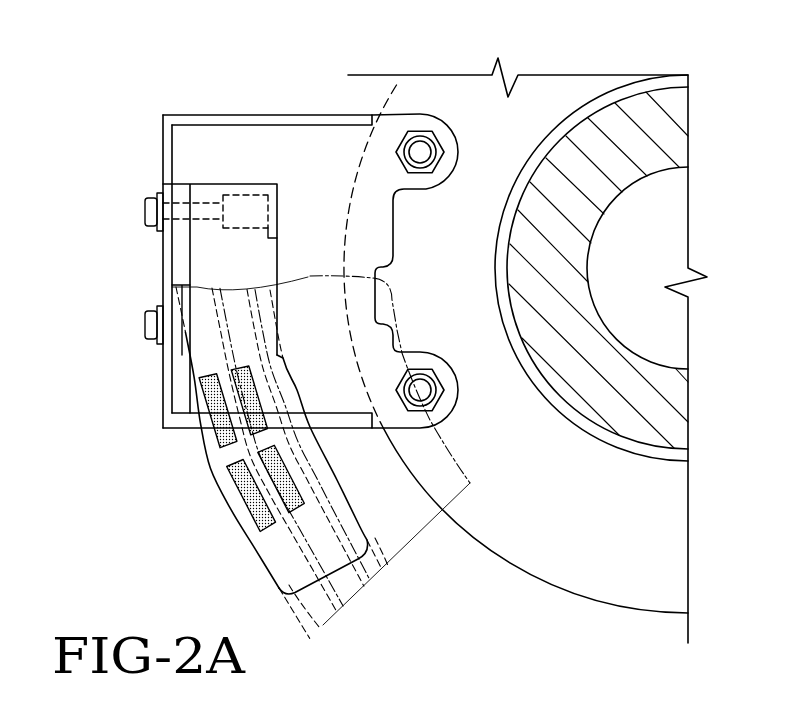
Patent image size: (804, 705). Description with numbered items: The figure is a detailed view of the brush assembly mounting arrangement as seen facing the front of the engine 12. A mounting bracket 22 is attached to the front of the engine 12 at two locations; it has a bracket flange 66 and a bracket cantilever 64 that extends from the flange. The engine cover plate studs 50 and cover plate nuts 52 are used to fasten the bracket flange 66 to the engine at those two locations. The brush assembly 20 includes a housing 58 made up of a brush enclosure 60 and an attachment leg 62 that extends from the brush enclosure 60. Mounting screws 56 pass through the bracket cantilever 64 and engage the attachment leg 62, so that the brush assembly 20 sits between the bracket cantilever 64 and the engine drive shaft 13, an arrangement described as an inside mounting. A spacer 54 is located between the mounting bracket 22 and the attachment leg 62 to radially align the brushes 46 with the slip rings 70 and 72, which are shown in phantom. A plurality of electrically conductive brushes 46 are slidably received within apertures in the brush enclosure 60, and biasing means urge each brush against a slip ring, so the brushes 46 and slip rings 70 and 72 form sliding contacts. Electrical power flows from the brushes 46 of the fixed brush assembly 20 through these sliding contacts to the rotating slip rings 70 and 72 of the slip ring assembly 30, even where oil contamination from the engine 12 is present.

The engine 12 is at (534, 72).
The engine drive shaft 13 is at (645, 77).
The brush assembly 20 is at (219, 496).
The mounting bracket 22 is at (158, 131).
The slip ring assembly 30 is at (414, 544).
The brushes 46 is at (280, 471).
The engine cover plate studs 50 is at (420, 148).
The cover plate nuts 52 is at (452, 147).
The spacer 54 is at (178, 350).
The mounting screws 56 is at (147, 327).
The housing 58 is at (239, 529).
The brush enclosure 60 is at (213, 463).
The attachment leg 62 is at (277, 307).
The bracket cantilever 64 is at (163, 402).
The bracket flange 66 is at (235, 138).
The slip ring 70 is at (357, 583).
The slip ring 72 is at (330, 612).